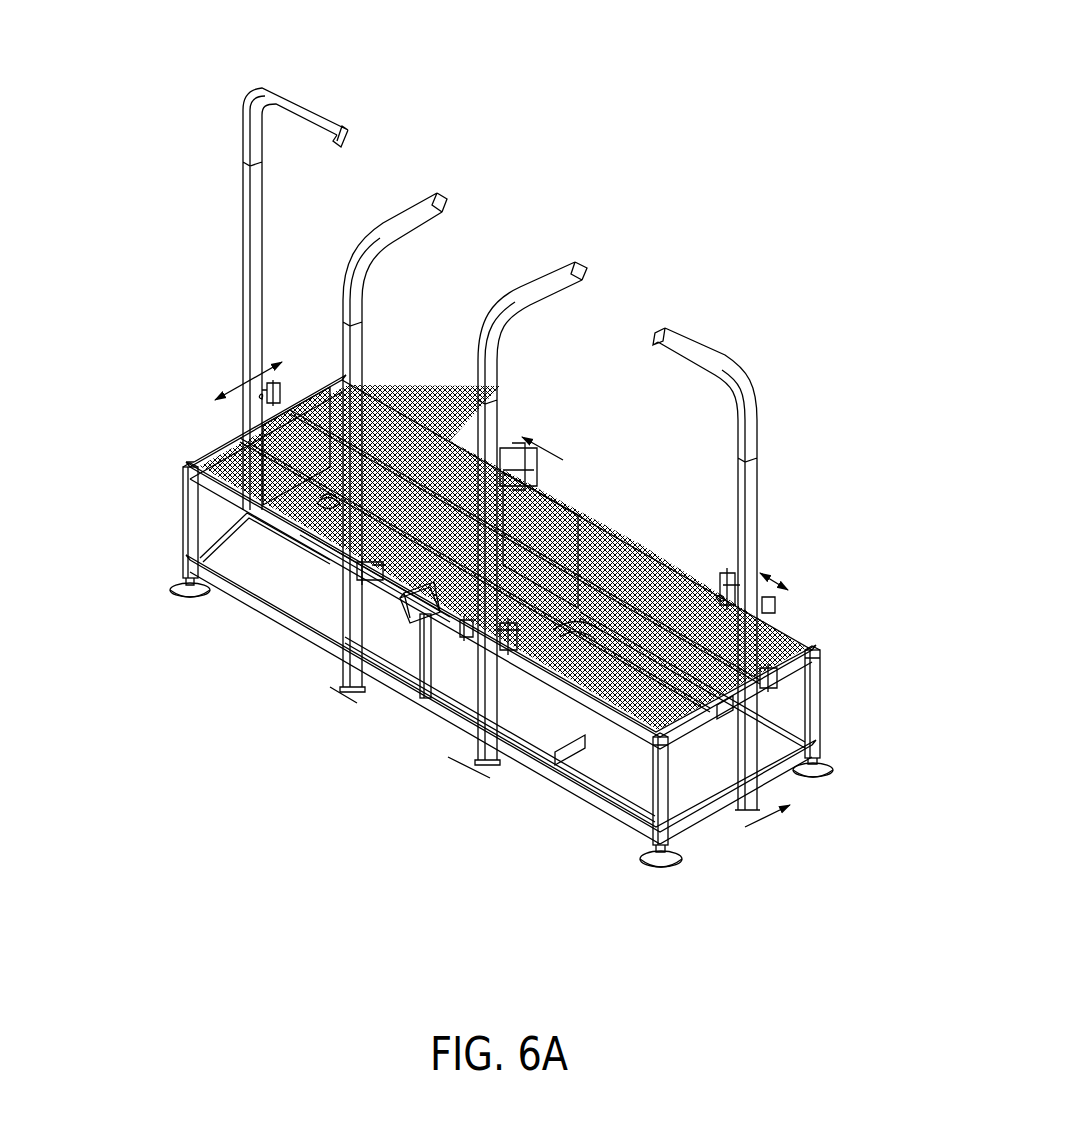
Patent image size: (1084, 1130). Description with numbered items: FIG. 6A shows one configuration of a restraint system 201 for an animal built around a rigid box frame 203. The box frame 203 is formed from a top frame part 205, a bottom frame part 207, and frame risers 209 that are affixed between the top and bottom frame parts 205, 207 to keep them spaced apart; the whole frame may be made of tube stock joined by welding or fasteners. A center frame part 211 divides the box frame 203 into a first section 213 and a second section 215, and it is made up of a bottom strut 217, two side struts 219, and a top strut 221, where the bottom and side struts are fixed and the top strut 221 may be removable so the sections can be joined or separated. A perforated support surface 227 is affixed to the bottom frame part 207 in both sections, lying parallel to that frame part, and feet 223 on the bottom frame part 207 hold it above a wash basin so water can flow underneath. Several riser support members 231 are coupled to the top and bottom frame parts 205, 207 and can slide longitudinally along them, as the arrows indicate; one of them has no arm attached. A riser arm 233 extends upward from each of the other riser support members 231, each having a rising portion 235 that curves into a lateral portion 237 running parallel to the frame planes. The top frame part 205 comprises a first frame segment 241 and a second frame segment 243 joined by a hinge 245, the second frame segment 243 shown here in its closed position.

The restraint system 201 is at (186, 126).
The box frame 203 is at (809, 636).
The top frame part 205 is at (205, 440).
The bottom frame part 207 is at (262, 606).
The frame risers 209 is at (184, 530).
The center frame part 211 is at (440, 702).
The first section 213 is at (433, 472).
The second section 215 is at (671, 622).
The bottom strut 217 is at (574, 640).
The side struts 219 is at (428, 662).
The top strut 221 is at (543, 520).
The feet 223 is at (640, 858).
The perforated support surface 227 is at (300, 596).
The riser support members 231 is at (185, 470).
The riser arm 233 is at (243, 256).
The rising portion 235 is at (760, 552).
The lateral portion 237 is at (697, 343).
The first frame segment 241 is at (318, 383).
The second frame segment 243 is at (205, 560).
The hinge 245 is at (208, 464).